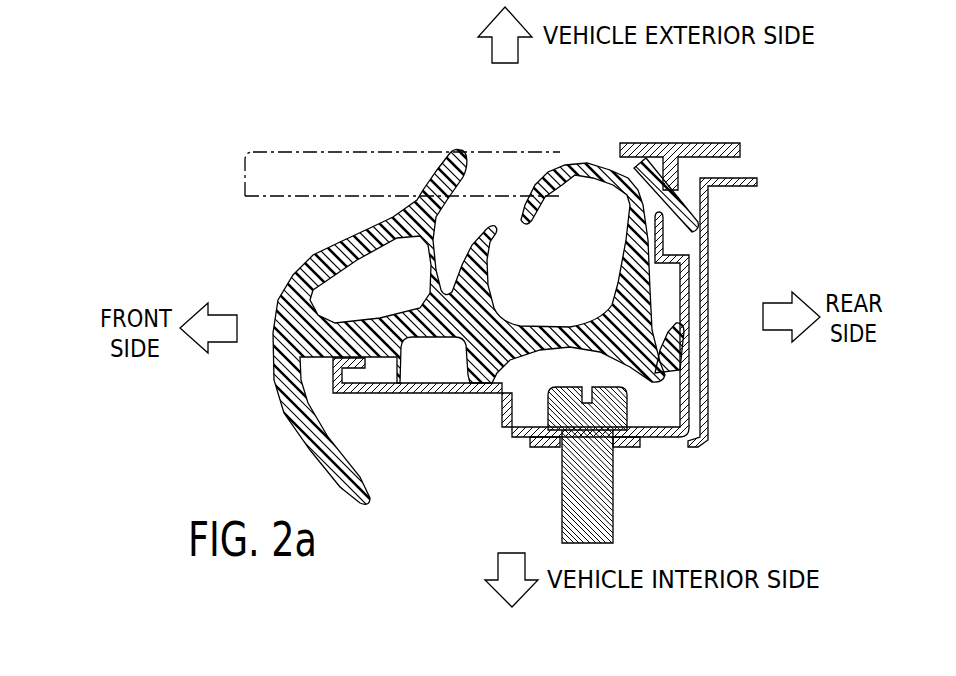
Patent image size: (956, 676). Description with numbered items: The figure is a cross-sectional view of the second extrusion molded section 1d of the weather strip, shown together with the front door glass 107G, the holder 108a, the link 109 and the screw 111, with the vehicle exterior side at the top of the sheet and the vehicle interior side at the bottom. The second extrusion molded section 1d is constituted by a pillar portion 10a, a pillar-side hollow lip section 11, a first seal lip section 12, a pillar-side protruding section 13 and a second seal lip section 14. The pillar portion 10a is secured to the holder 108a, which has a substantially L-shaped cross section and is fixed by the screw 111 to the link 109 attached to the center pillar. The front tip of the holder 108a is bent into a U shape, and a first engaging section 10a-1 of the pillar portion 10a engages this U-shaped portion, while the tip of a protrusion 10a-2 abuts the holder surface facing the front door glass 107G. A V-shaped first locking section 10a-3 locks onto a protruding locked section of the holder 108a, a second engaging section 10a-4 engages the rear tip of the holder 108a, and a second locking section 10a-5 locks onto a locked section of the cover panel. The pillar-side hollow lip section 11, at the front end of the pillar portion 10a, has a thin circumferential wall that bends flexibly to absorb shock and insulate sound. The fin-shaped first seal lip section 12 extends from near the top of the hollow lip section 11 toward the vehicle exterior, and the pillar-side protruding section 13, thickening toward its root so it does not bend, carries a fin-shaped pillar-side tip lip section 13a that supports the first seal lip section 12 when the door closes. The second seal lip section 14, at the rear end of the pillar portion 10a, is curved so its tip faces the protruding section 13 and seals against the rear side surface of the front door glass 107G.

The second extrusion molded section 1d is at (257, 268).
The pillar-side hollow lip section 11 is at (347, 247).
The first seal lip section 12 is at (430, 178).
The pillar-side protruding section 13 is at (483, 273).
The pillar-side tip lip section 13a is at (487, 226).
The second seal lip section 14 is at (585, 168).
The pillar portion 10a is at (577, 337).
The first engaging section 10a-1 is at (377, 367).
The protrusion 10a-2 is at (477, 377).
The first locking section 10a-3 is at (680, 355).
The second engaging section 10a-4 is at (677, 221).
The second locking section 10a-5 is at (659, 178).
The front door glass 107G is at (353, 152).
The holder 108a is at (512, 403).
The link 109 is at (712, 243).
The screw 111 is at (597, 500).